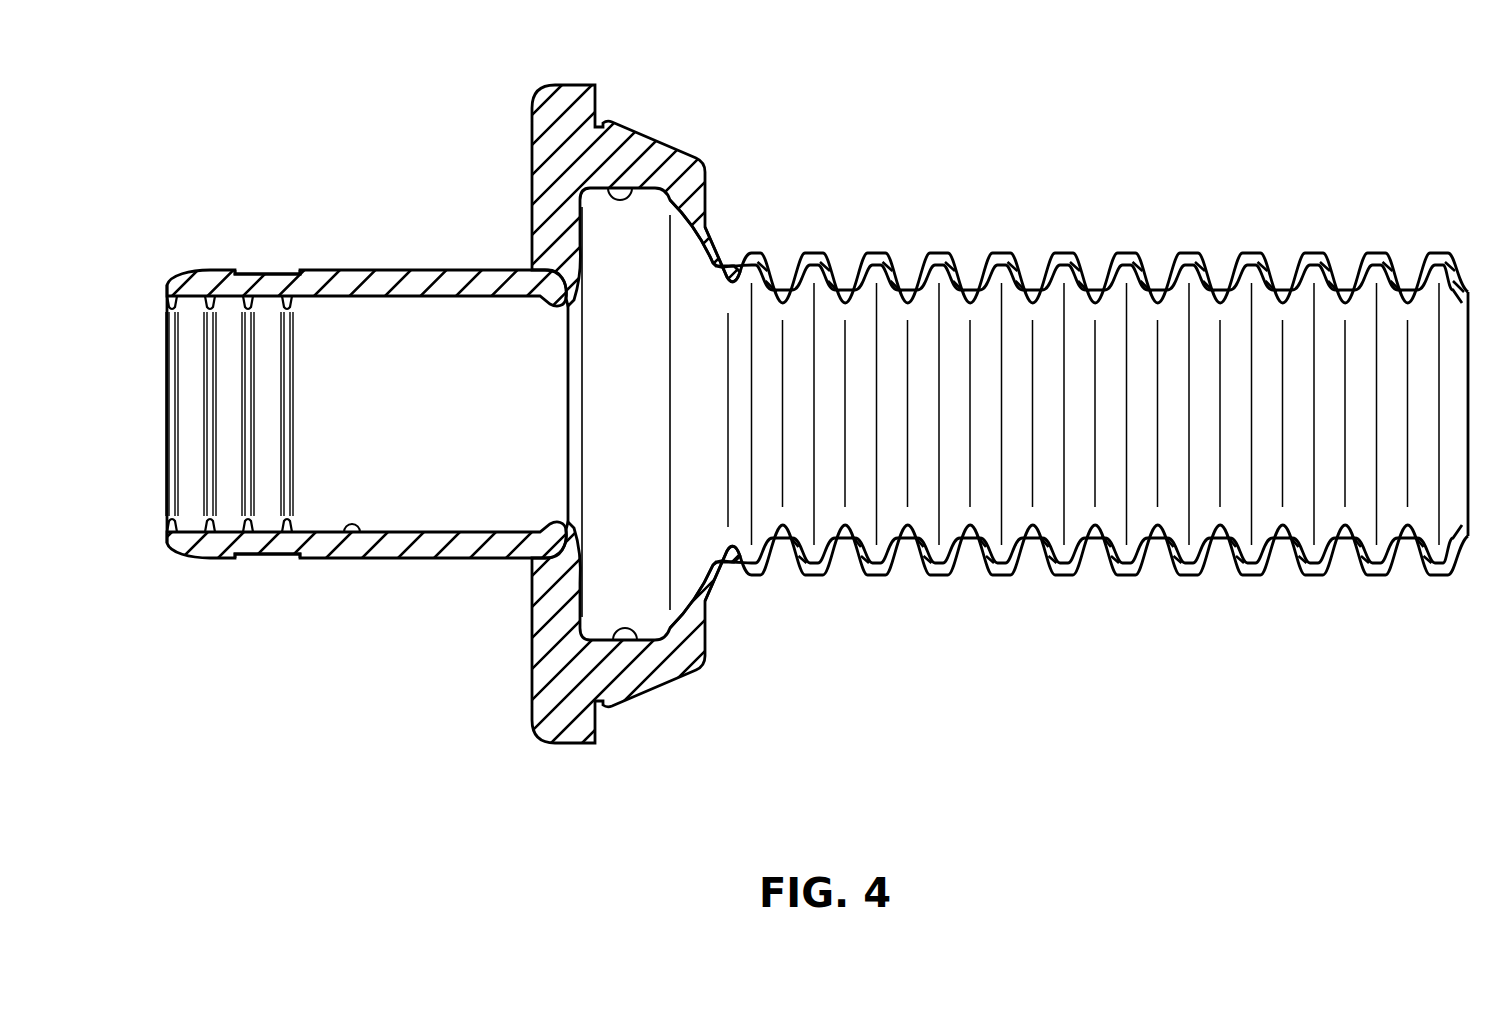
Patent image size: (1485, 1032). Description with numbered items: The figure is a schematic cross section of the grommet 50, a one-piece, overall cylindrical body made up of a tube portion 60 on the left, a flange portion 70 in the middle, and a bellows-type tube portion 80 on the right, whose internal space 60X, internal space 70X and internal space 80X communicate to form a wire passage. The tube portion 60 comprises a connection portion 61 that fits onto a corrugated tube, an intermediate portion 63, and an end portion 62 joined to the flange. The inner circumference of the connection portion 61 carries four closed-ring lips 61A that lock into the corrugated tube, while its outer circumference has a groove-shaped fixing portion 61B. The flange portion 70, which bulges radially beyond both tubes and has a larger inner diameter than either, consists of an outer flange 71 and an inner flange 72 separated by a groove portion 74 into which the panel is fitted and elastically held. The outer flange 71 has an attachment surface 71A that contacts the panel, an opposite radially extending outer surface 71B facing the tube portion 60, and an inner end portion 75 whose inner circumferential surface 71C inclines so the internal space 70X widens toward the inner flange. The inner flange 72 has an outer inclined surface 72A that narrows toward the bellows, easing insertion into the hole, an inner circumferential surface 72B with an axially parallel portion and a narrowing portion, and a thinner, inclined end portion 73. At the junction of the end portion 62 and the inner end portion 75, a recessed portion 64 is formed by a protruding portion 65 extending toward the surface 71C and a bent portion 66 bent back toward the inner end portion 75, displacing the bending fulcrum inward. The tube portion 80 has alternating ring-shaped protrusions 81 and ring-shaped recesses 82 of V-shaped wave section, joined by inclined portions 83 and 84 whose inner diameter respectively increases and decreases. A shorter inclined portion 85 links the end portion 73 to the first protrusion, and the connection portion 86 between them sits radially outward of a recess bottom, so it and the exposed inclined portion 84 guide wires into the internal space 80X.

The grommet 50 is at (1393, 89).
The tube portion 60 is at (447, 545).
The internal space of the tube portion 60X is at (353, 534).
The connection portion 61 is at (231, 275).
The lips 61A is at (180, 297).
The fixing portion 61B is at (262, 272).
The end portion 62 is at (555, 348).
The intermediate portion 63 is at (392, 280).
The recessed portion 64 is at (540, 262).
The protruding portion 65 is at (538, 300).
The bent portion 66 is at (557, 300).
The flange portion 70 is at (568, 738).
The internal space of the flange portion 70X is at (641, 640).
The outer flange 71 is at (578, 90).
The attachment surface 71A is at (603, 105).
The outer surface 71B is at (532, 132).
The inner circumferential surface 71C is at (547, 197).
The inner flange 72 is at (700, 165).
The inclined surface 72A is at (672, 680).
The inner circumferential surface 72B is at (640, 188).
The end portion 73 is at (713, 228).
The groove portion 74 is at (605, 735).
The inner end portion 75 is at (550, 232).
The tube portion 80 is at (870, 570).
The internal space of the tube portion 80X is at (936, 548).
The ring-shaped protrusions 81 is at (940, 260).
The ring-shaped recesses 82 is at (972, 292).
The inclined portion 83 is at (853, 275).
The inclined portion 84 is at (770, 272).
The inclined portion 85 is at (737, 272).
The connection portion 86 is at (732, 283).